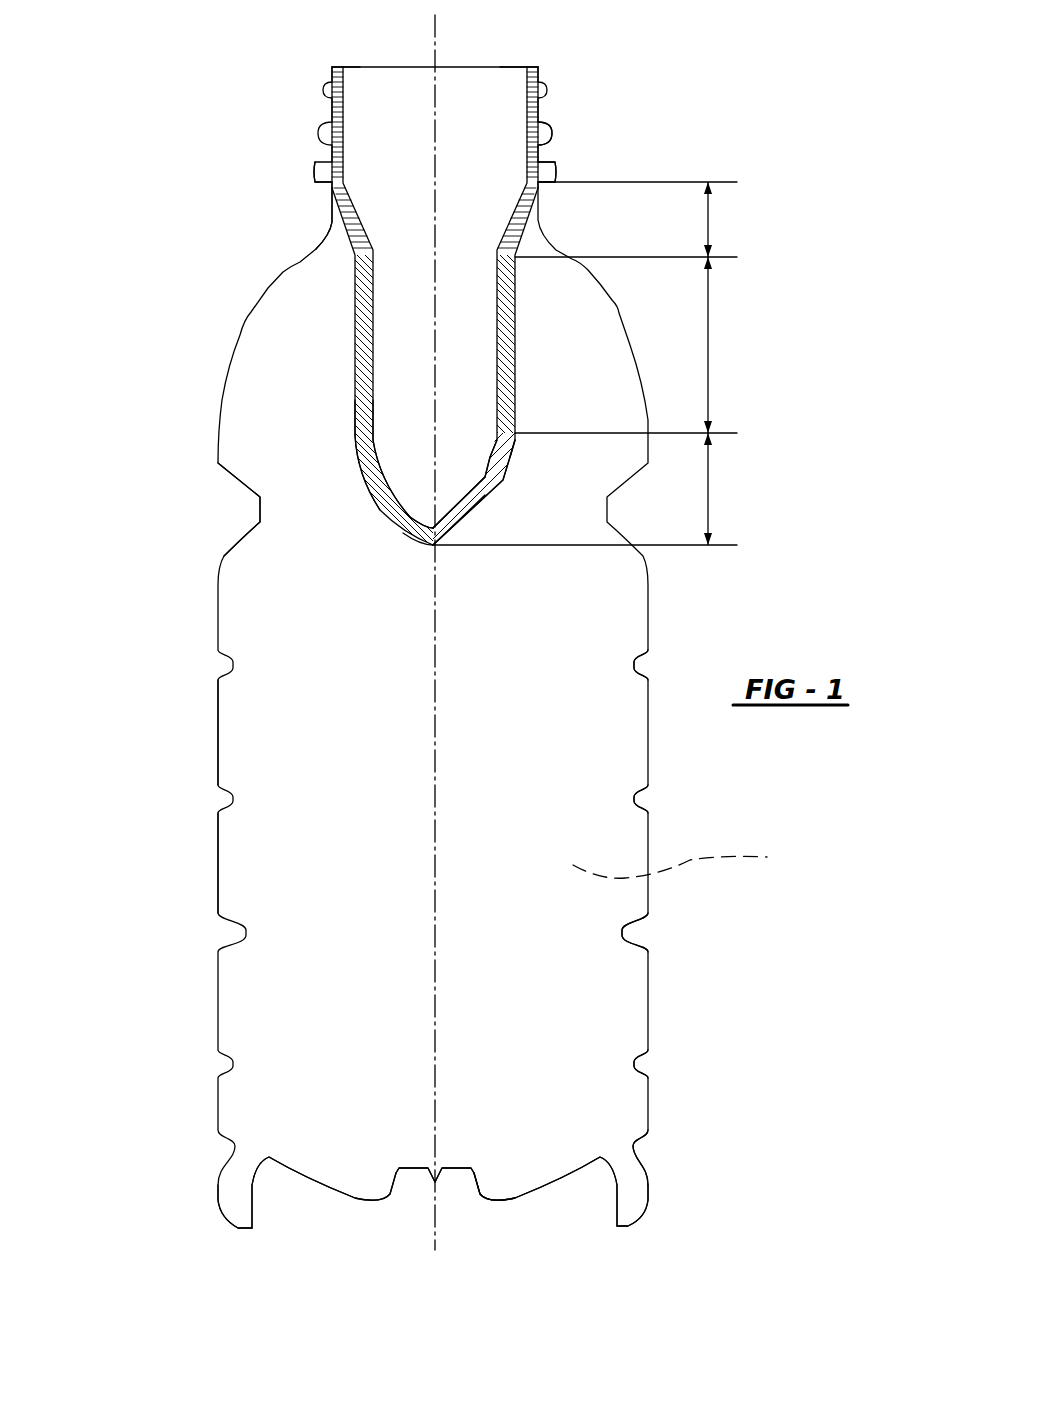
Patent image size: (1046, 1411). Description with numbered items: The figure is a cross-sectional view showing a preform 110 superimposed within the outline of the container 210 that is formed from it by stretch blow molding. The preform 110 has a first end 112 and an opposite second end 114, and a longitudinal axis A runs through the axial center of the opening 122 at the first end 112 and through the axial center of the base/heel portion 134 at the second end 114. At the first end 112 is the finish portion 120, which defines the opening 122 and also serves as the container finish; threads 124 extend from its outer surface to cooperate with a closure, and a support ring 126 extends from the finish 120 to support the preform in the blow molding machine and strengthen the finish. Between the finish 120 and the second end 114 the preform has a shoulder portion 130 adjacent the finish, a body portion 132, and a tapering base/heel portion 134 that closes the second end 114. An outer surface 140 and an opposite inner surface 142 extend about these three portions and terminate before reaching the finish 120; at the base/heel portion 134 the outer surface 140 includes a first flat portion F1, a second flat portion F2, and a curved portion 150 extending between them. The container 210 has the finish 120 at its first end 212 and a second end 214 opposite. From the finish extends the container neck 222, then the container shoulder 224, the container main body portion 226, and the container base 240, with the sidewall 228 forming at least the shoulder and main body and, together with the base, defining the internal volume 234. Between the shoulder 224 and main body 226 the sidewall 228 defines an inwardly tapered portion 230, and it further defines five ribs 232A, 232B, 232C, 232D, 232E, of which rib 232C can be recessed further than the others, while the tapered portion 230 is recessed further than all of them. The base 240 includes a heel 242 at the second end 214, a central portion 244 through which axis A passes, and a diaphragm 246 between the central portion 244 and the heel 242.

The preform 110 is at (334, 343).
The first end 112 is at (337, 66).
The second end 114 is at (427, 545).
The finish portion 120 is at (327, 105).
The opening 122 is at (525, 70).
The threads 124 is at (546, 100).
The support ring 126 is at (557, 165).
The shoulder portion 130 is at (636, 219).
The body portion 132 is at (634, 345).
The base/heel portion 134 is at (593, 489).
The outer surface 140 is at (355, 443).
The inner surface 142 is at (377, 437).
The curved portion 150 is at (507, 480).
The longitudinal axis A is at (438, 42).
The first flat portion F1 is at (510, 453).
The second flat portion F2 is at (483, 517).
The container 210 is at (135, 620).
The first end 212 is at (540, 72).
The second end 214 is at (327, 1190).
The container neck 222 is at (318, 182).
The container shoulder 224 is at (327, 213).
The container main body portion 226 is at (218, 733).
The sidewall 228 is at (217, 837).
The inwardly tapered portion 230 is at (257, 512).
The rib 232A is at (635, 660).
The rib 232B is at (635, 793).
The rib 232C is at (625, 930).
The rib 232D is at (635, 1063).
The rib 232E is at (635, 1147).
The internal volume 234 is at (693, 862).
The container base 240 is at (578, 1203).
The heel 242 is at (622, 1227).
The central portion 244 is at (408, 1172).
The diaphragm 246 is at (478, 1203).